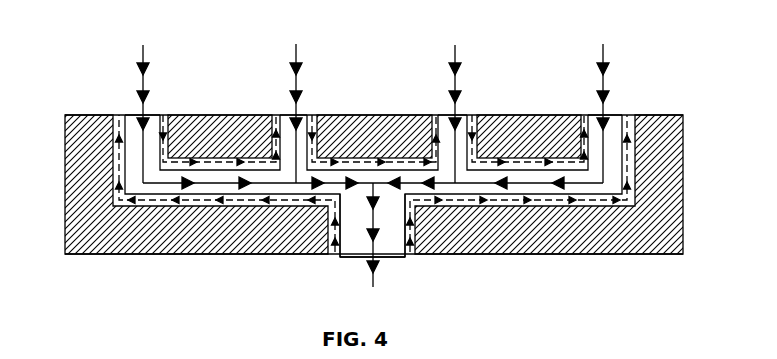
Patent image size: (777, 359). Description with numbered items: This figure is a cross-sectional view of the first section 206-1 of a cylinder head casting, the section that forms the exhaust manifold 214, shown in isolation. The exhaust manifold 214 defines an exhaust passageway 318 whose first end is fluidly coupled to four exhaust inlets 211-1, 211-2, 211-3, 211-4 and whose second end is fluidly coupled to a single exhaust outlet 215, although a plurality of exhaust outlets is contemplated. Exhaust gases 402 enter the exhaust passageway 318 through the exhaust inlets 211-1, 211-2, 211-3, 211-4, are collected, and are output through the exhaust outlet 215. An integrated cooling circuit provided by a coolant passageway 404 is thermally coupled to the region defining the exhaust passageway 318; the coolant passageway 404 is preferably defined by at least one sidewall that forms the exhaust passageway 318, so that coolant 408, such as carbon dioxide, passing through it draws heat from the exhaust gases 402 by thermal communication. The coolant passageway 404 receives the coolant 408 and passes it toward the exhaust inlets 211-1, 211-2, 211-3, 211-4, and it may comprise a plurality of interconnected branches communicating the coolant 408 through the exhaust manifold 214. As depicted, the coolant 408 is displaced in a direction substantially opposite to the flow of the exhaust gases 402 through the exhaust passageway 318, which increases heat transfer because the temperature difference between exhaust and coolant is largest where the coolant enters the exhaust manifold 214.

The exhaust manifold 214 is at (80, 92).
The first section 206-1 is at (152, 276).
The coolant 408 is at (410, 262).
The exhaust passageway 318 is at (389, 256).
The exhaust outlet 215 is at (344, 266).
The exhaust inlet 211-1 is at (157, 97).
The exhaust inlet 211-2 is at (310, 97).
The exhaust inlet 211-3 is at (469, 97).
The exhaust inlet 211-4 is at (621, 101).
The exhaust gases 402 is at (143, 45).
The coolant passageway 404 is at (519, 214).